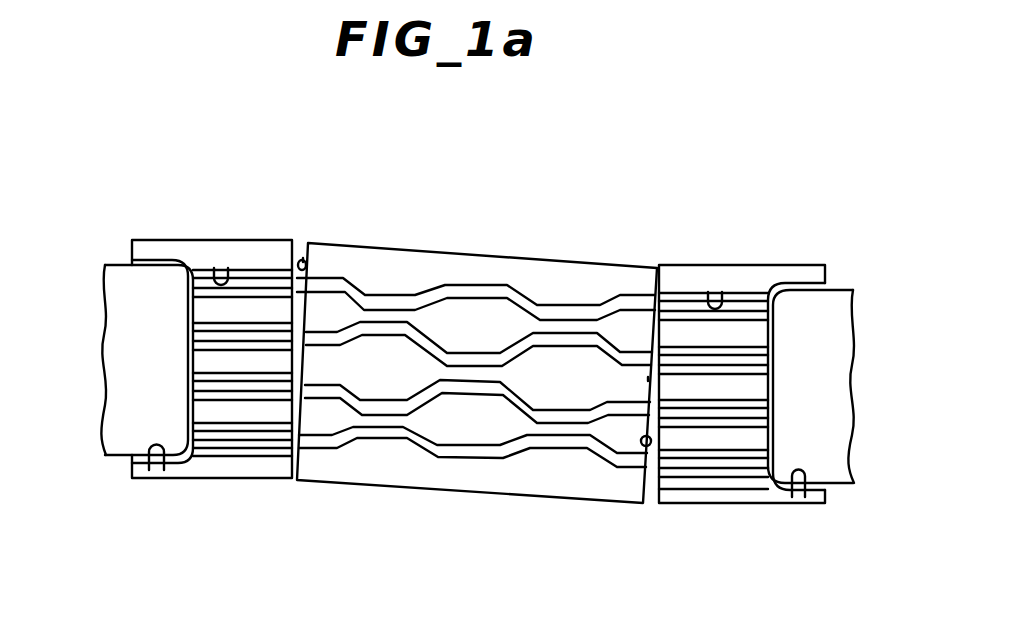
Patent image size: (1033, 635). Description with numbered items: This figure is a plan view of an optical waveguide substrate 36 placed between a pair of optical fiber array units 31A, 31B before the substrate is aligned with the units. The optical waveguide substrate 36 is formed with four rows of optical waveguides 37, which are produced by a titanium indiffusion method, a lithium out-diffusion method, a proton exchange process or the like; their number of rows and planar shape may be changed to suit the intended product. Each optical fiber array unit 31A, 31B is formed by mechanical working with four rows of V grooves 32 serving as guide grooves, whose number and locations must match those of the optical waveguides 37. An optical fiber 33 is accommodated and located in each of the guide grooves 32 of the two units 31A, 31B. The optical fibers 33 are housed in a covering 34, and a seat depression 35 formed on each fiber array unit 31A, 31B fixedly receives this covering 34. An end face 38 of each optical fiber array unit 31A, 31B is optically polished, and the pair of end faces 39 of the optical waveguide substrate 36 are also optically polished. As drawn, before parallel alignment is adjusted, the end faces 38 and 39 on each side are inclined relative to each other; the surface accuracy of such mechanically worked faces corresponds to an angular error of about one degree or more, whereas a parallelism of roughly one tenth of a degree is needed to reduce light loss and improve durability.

The optical fiber array unit 31A is at (260, 230).
The optical fiber array unit 31B is at (772, 250).
The V groove 32 is at (217, 269).
The optical fiber 33 is at (258, 440).
The covering 34 is at (128, 422).
The seat depression 35 is at (157, 470).
The optical waveguide substrate 36 is at (493, 486).
The optical waveguide 37 is at (453, 452).
The end face of optical fiber array unit 38 is at (303, 262).
The end face of optical waveguide substrate 39 is at (306, 262).